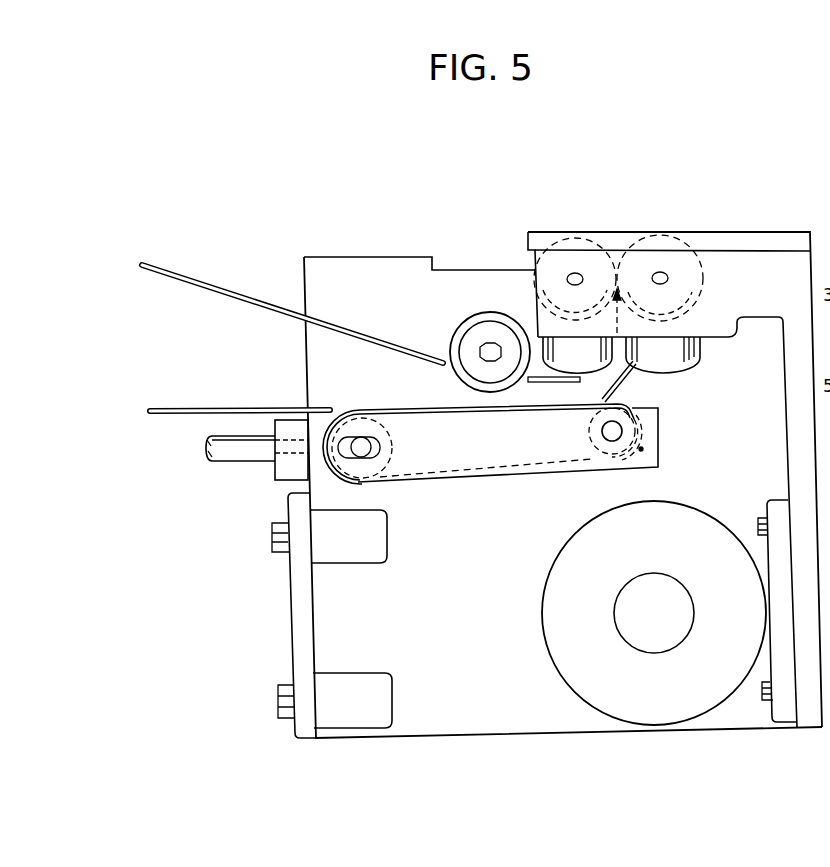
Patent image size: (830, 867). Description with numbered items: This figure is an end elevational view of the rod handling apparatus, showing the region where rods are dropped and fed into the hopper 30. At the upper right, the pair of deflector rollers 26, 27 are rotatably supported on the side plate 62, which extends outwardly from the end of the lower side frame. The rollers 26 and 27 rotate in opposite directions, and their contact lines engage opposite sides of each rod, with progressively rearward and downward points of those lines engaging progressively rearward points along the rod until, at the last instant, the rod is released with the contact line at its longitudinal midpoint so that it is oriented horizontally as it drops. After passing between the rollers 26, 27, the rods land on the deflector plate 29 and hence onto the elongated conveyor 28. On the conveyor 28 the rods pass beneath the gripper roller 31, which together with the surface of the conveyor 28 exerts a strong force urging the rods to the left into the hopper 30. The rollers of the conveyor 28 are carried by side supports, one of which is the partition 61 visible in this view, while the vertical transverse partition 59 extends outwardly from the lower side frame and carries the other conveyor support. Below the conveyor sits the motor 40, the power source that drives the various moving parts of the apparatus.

The deflector roller 26 is at (698, 356).
The deflector roller 27 is at (594, 253).
The elongated conveyor 28 is at (427, 410).
The deflector plate 29 is at (621, 381).
The hopper 30 is at (208, 352).
The gripper roller 31 is at (468, 319).
The motor 40 is at (557, 568).
The vertical transverse partition 59 is at (378, 258).
The side support 61 is at (652, 446).
The side plate 62 is at (722, 257).